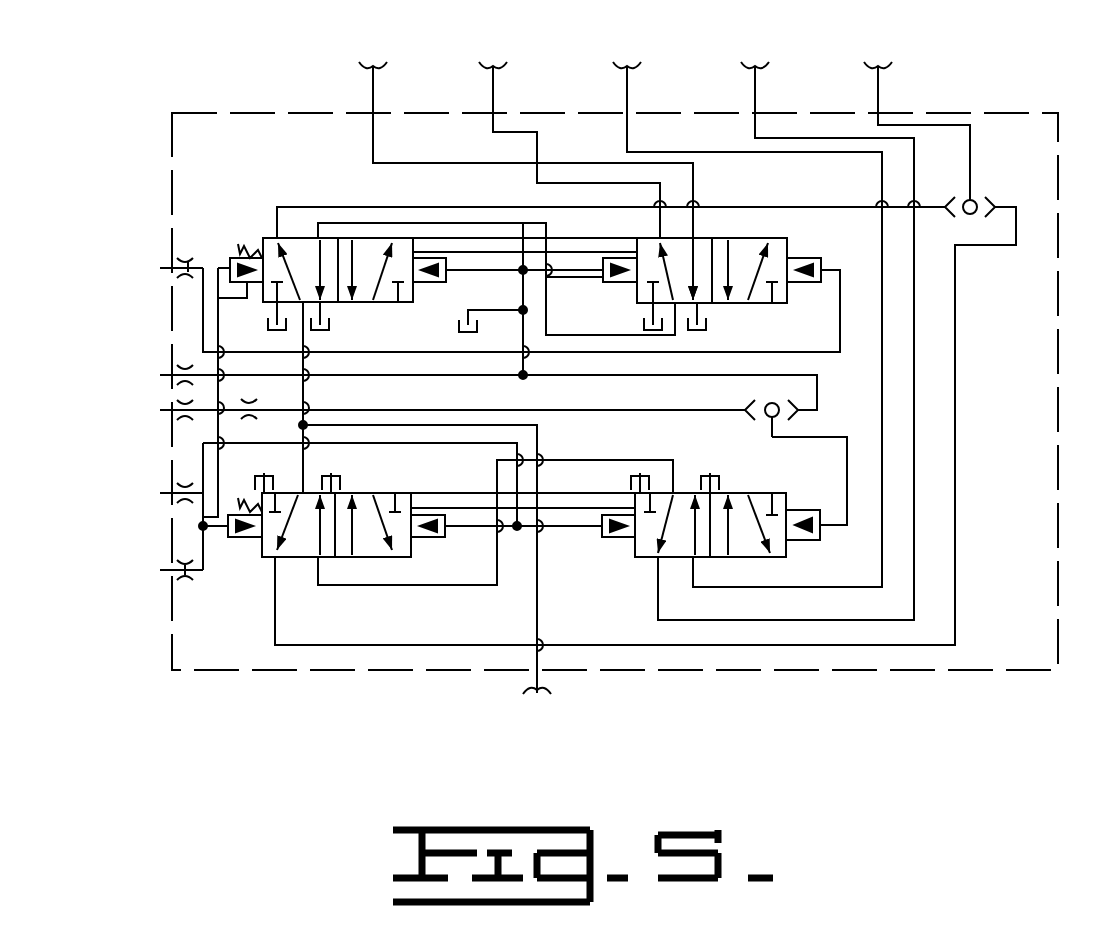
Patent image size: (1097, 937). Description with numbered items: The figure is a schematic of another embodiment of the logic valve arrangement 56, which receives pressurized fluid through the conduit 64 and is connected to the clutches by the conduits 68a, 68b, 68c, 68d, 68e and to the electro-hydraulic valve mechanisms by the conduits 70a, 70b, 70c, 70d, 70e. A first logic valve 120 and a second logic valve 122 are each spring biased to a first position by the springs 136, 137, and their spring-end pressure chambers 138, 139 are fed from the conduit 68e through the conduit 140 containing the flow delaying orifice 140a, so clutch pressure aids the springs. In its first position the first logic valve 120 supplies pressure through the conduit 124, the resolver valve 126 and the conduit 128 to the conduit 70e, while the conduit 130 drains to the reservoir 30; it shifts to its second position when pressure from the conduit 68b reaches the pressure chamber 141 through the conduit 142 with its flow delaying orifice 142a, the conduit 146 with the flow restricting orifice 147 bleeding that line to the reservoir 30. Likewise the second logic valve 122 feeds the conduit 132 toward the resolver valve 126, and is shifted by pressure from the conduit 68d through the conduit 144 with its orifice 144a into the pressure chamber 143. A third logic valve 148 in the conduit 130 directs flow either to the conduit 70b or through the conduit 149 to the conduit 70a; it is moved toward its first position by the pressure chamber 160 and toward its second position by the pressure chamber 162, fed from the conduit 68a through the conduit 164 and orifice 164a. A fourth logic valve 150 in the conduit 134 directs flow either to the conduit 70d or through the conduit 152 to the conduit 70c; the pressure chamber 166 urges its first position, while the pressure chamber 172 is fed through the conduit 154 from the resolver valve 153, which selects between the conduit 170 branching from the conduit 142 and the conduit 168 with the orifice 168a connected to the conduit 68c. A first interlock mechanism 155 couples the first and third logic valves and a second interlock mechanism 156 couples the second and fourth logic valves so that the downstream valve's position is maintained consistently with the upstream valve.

The logic valve arrangement 56 is at (260, 128).
The conduit 70a is at (373, 85).
The conduit 70b is at (493, 85).
The conduit 70c is at (627, 85).
The conduit 70d is at (755, 85).
The conduit 70e is at (878, 85).
The conduit 128 is at (972, 125).
The resolver valve 126 is at (970, 200).
The conduit 130 is at (360, 207).
The conduit 124 is at (780, 207).
The conduit 149 is at (560, 160).
The first interlock mechanism 155 is at (523, 222).
The first logic valve 120 is at (263, 238).
The spring 136 is at (252, 250).
The pressure chamber 138 is at (218, 298).
The conduit 146 is at (470, 310).
The pressure chamber 141 is at (440, 285).
The conduit 142 is at (515, 360).
The flow restricting orifice 147 is at (470, 335).
The flow delaying orifice 142a is at (560, 245).
The third logic valve 148 is at (775, 240).
The pressure chamber 160 is at (655, 300).
The conduit 164 is at (800, 352).
The pressure chamber 162 is at (840, 295).
The conduit 170 is at (720, 373).
The reservoir 30 is at (330, 325).
The conduit 68a is at (175, 268).
The flow delaying orifice 164a is at (190, 268).
The conduit 68b is at (175, 375).
The conduit 68c is at (175, 410).
The conduit 140 is at (203, 443).
The flow delaying orifice 168a is at (250, 420).
The conduit 68d is at (175, 493).
The flow delaying orifice 144a is at (200, 526).
The conduit 68e is at (175, 570).
The flow delaying orifice 140a is at (185, 572).
The conduit 168 is at (548, 408).
The resolver valve 153 is at (760, 392).
The conduit 154 is at (828, 432).
The second interlock mechanism 156 is at (550, 480).
The conduit 64 is at (540, 685).
The second logic valve 122 is at (270, 557).
The spring 137 is at (228, 526).
The pressure chamber 139 is at (245, 537).
The pressure chamber 143 is at (428, 537).
The conduit 144 is at (466, 526).
The pressure chamber 166 is at (640, 540).
The conduit 152 is at (880, 578).
The fourth logic valve 150 is at (775, 490).
The pressure chamber 172 is at (820, 535).
The conduit 134 is at (882, 370).
The conduit 132 is at (955, 448).